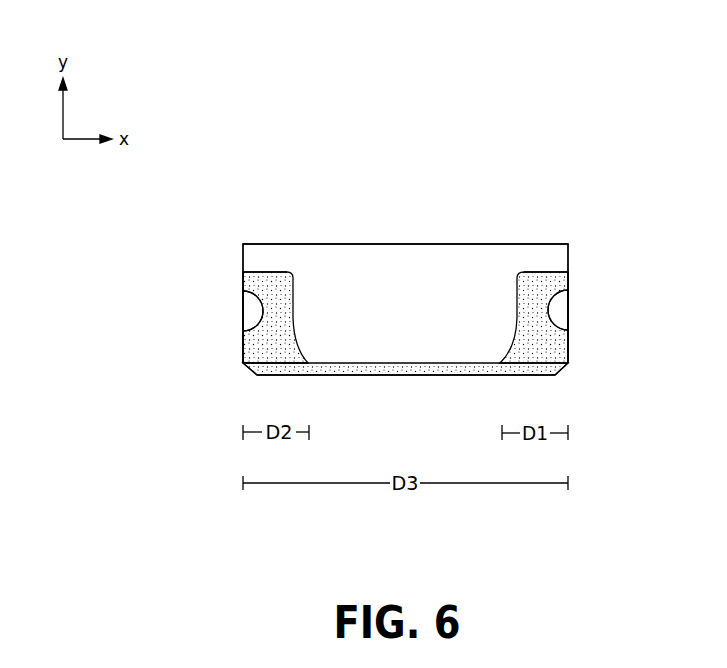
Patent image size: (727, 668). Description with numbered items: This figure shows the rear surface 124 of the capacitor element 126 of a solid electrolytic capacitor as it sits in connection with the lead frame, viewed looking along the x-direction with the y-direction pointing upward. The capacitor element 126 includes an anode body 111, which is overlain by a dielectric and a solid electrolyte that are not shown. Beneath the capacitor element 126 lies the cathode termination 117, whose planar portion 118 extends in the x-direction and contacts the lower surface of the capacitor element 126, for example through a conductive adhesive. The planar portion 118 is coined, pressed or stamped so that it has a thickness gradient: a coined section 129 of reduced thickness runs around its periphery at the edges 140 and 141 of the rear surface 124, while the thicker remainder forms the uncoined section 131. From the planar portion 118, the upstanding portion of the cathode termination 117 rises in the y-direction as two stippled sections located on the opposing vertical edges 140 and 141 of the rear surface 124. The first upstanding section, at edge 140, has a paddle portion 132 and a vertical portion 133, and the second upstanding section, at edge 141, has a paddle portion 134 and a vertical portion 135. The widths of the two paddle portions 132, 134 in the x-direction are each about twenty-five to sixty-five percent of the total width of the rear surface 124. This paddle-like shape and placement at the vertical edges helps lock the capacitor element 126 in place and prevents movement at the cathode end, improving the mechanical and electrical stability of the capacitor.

The capacitor element 126 is at (286, 135).
The anode body 111 is at (410, 267).
The rear surface 124 is at (367, 323).
The paddle portion 134 is at (246, 283).
The edge 141 is at (243, 312).
The vertical portion 135 is at (247, 331).
The cathode termination 117 is at (243, 364).
The coined section 129 is at (250, 377).
The uncoined section 131 is at (290, 375).
The planar portion 118 is at (395, 365).
The paddle portion 132 is at (565, 284).
The edge 140 is at (569, 303).
The vertical portion 133 is at (556, 330).